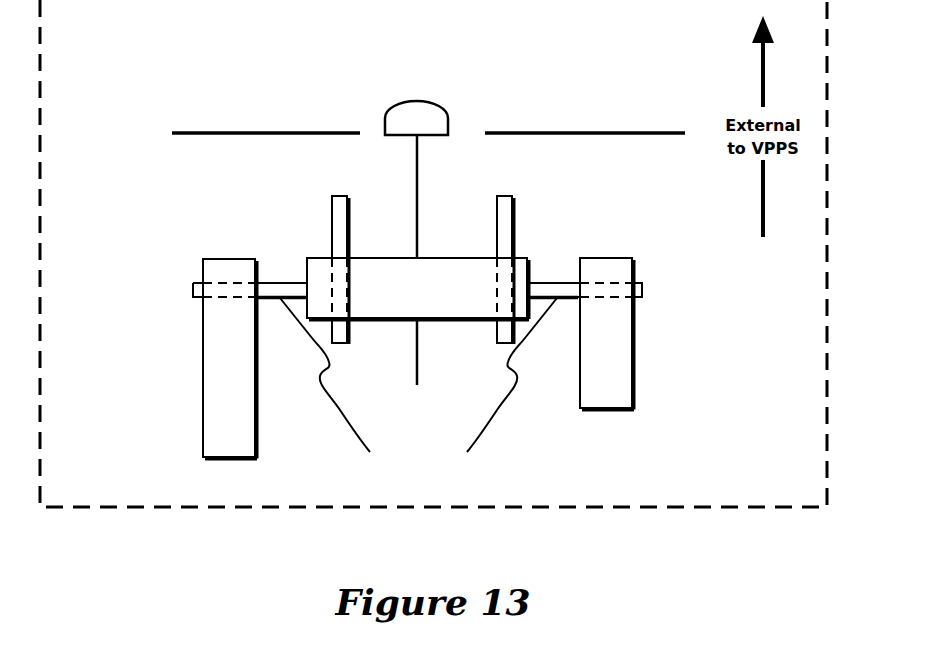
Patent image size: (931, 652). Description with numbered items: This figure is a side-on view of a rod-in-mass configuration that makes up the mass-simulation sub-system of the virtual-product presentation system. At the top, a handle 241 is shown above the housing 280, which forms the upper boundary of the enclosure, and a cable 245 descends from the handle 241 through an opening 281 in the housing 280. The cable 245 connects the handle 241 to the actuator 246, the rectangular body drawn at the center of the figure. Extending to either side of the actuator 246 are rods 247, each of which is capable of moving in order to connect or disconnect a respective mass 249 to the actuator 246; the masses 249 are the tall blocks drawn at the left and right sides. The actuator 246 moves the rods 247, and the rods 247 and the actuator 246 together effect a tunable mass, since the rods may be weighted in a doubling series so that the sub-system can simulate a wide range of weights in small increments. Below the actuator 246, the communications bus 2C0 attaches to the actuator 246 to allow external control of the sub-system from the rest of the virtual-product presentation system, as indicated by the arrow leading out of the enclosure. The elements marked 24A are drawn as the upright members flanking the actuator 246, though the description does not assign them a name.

The housing 280 is at (207, 134).
The opening 281 is at (466, 132).
The handle 241 is at (443, 105).
The cable 245 is at (417, 188).
The vertical bars 24A is at (332, 199).
The actuator 246 is at (418, 289).
The mass 249 is at (417, 358).
The communications bus 2C0 is at (417, 368).
The rod 247 is at (418, 390).